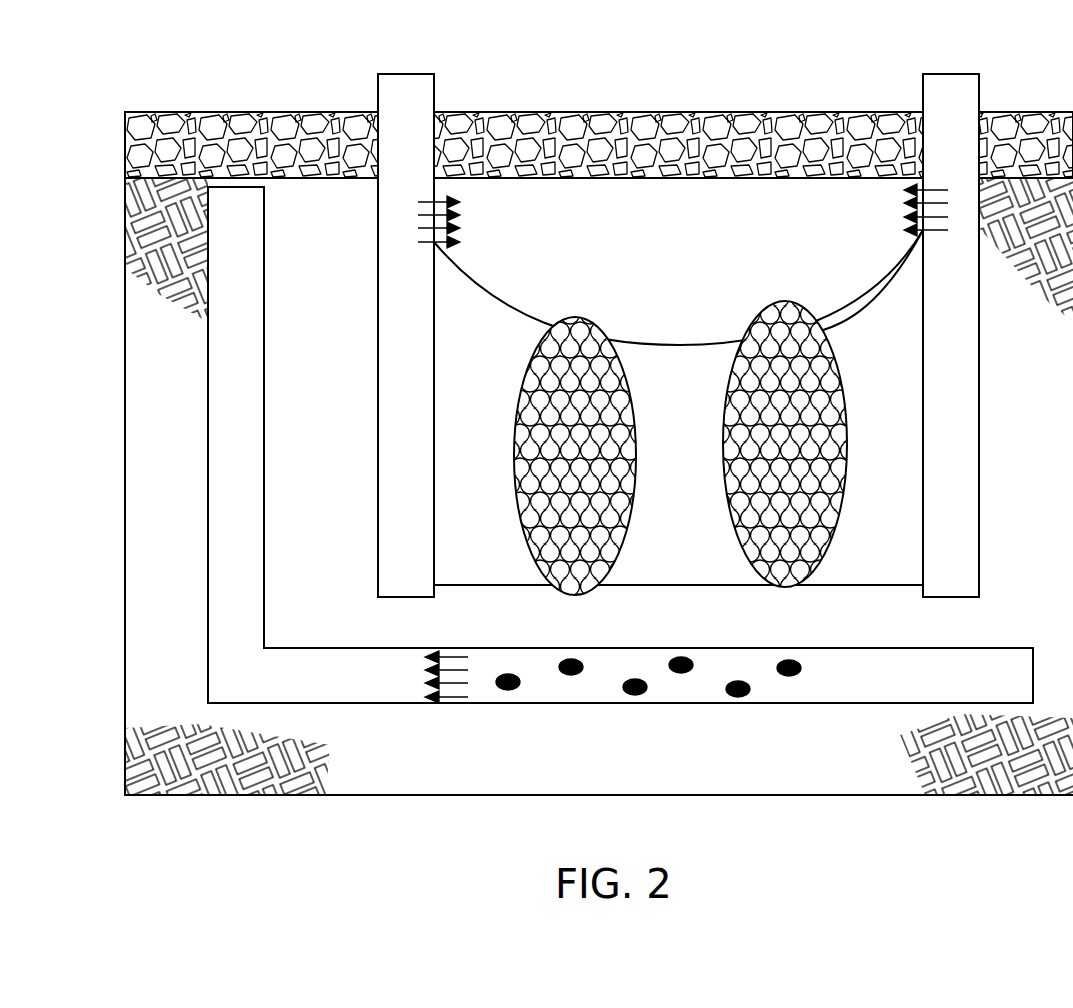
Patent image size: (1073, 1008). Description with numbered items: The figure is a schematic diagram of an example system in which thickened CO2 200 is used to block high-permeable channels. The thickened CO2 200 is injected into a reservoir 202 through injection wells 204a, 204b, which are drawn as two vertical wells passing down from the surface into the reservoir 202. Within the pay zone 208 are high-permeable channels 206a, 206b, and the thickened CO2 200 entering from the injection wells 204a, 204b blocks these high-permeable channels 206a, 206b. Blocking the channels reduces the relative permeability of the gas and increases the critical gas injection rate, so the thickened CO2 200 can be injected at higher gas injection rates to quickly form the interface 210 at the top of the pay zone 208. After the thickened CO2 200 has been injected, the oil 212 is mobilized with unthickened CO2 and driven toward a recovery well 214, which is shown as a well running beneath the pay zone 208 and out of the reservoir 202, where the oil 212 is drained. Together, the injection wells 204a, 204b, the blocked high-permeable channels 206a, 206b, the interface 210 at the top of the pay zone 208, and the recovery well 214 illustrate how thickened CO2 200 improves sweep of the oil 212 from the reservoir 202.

The thickened CO2 200 is at (700, 271).
The reservoir 202 is at (475, 318).
The injection well 204a is at (408, 73).
The injection well 204b is at (948, 73).
The high-permeable channel 206a is at (580, 535).
The high-permeable channel 206b is at (793, 517).
The pay zone 208 is at (683, 560).
The interface 210 is at (858, 293).
The oil 212 is at (943, 670).
The recovery well 214 is at (650, 767).